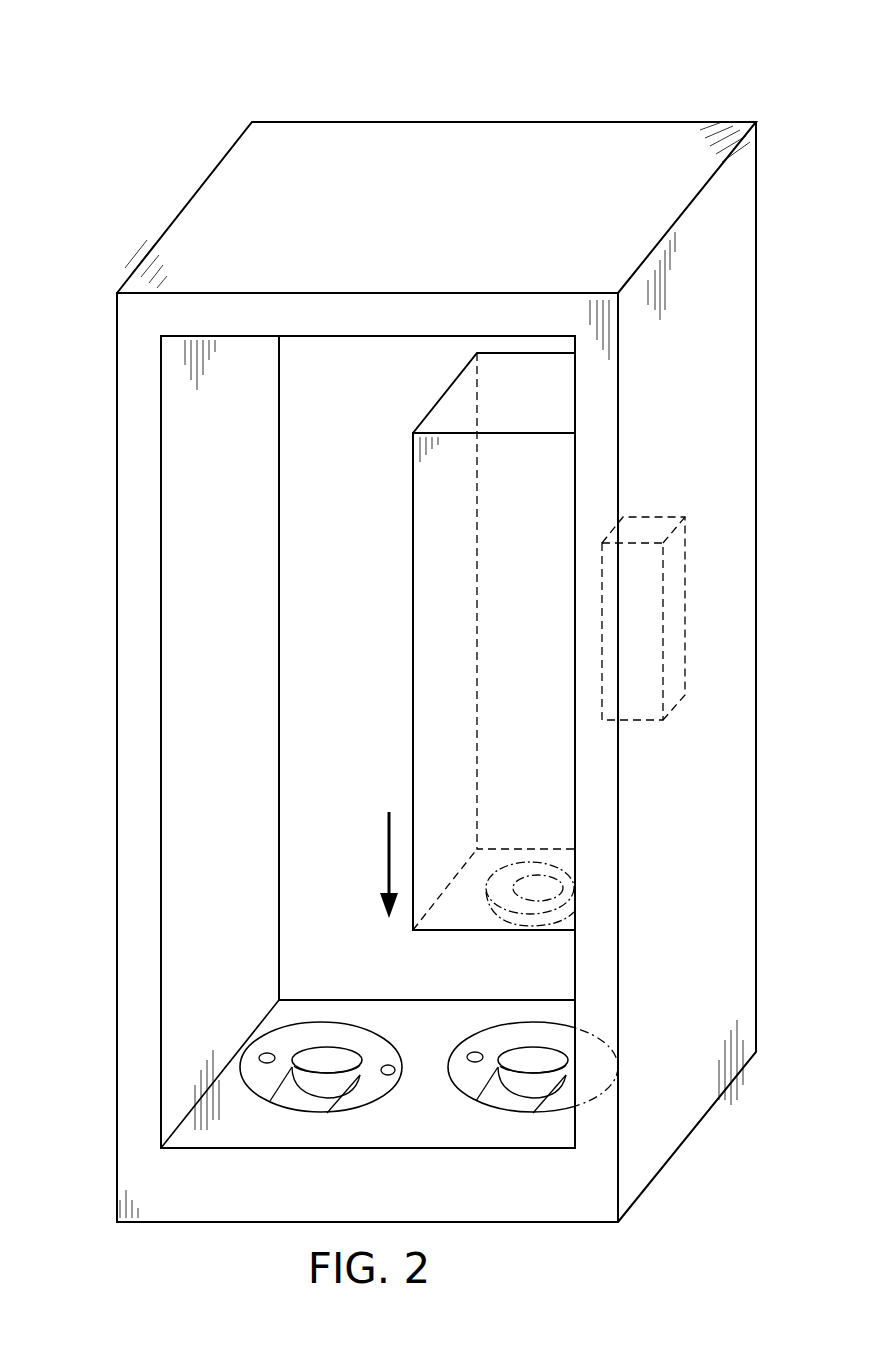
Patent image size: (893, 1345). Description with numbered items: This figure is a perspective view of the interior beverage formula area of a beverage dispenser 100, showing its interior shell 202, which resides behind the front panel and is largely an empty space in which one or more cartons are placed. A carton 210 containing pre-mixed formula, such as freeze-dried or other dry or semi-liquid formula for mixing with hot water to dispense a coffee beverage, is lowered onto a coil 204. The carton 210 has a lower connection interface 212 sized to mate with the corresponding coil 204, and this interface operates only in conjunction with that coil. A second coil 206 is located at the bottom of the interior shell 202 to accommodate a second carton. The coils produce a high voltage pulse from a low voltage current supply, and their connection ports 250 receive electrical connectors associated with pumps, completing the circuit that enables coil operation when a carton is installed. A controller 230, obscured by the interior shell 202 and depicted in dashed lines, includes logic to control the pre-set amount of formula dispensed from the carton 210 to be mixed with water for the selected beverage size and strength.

The beverage dispenser 100 is at (90, 60).
The interior shell 202 is at (173, 435).
The coil 204 is at (470, 1085).
The second coil 206 is at (345, 1030).
The carton 210 is at (413, 631).
The lower connection interface 212 is at (495, 912).
The controller 230 is at (655, 515).
The connection ports 250 is at (267, 1052).